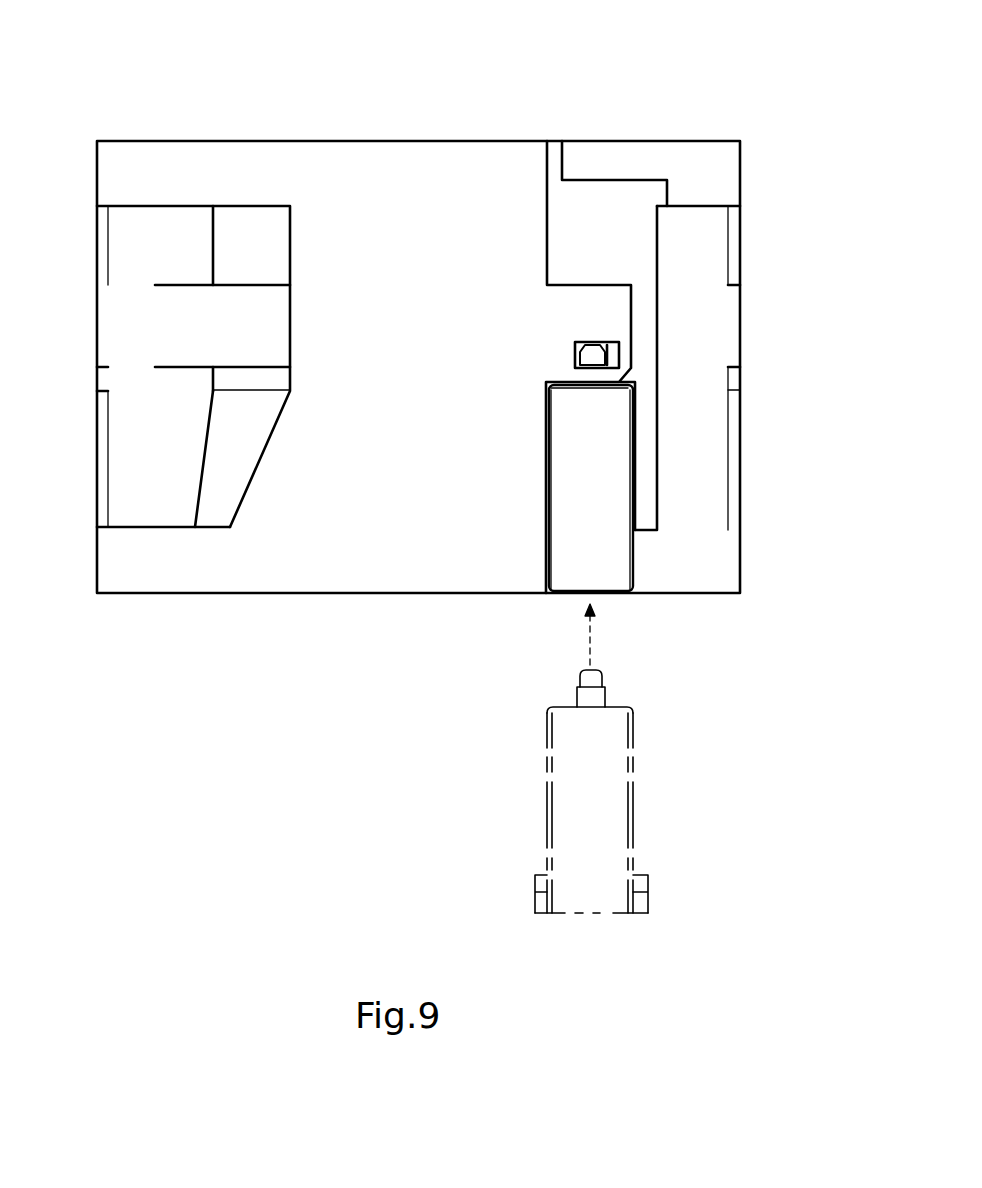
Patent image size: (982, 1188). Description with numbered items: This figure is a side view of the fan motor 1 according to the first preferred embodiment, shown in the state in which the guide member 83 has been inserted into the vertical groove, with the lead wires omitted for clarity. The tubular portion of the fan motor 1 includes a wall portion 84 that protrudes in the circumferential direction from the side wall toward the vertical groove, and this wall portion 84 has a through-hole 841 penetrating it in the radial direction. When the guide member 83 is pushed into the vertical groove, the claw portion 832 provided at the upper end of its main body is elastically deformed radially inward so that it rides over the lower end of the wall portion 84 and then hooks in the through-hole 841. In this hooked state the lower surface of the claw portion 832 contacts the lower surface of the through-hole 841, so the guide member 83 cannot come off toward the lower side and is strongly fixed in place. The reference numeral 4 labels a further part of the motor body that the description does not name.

The fan motor 1 is at (483, 90).
The housing 4 is at (277, 563).
The guide member 83 is at (583, 507).
The wall portion 84 is at (602, 313).
The through-hole 841 is at (610, 353).
The claw portion 832 is at (593, 368).